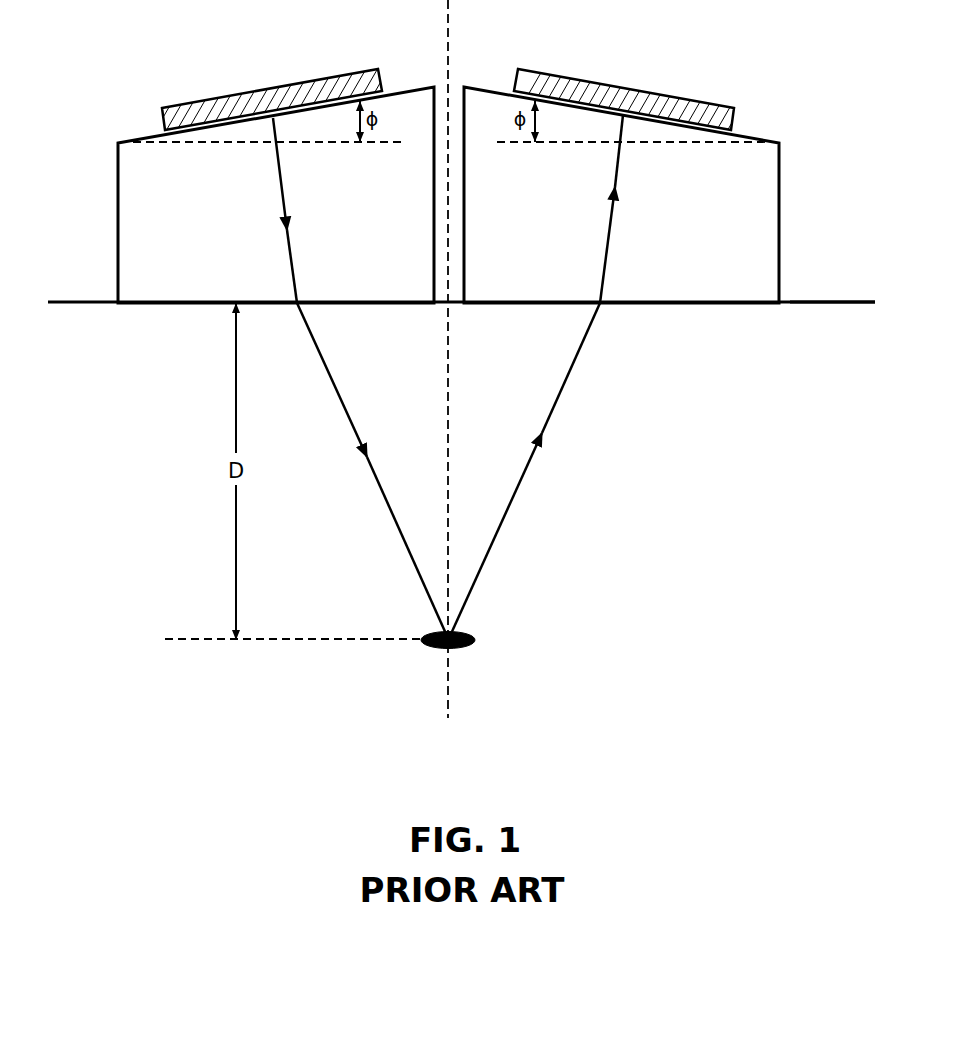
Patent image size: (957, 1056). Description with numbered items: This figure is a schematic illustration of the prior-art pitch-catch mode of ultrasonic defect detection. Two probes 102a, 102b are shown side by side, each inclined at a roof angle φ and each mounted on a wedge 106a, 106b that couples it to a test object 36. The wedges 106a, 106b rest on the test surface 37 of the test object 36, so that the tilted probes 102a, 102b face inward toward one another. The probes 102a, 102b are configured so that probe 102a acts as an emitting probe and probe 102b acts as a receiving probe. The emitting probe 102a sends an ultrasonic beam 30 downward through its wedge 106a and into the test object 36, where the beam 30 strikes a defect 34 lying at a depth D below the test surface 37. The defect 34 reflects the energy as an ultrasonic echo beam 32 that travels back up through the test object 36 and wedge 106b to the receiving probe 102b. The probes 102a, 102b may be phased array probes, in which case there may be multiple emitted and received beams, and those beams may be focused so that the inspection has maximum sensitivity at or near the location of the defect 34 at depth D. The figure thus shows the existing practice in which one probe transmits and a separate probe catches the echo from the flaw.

The emitting probe 102a is at (252, 103).
The receiving probe 102b is at (610, 103).
The wedge 106a is at (173, 282).
The wedge 106b is at (728, 282).
The test surface 37 is at (68, 302).
The test object 36 is at (827, 353).
The ultrasonic beam 30 is at (350, 425).
The ultrasonic echo beam 32 is at (528, 468).
The defect 34 is at (475, 640).